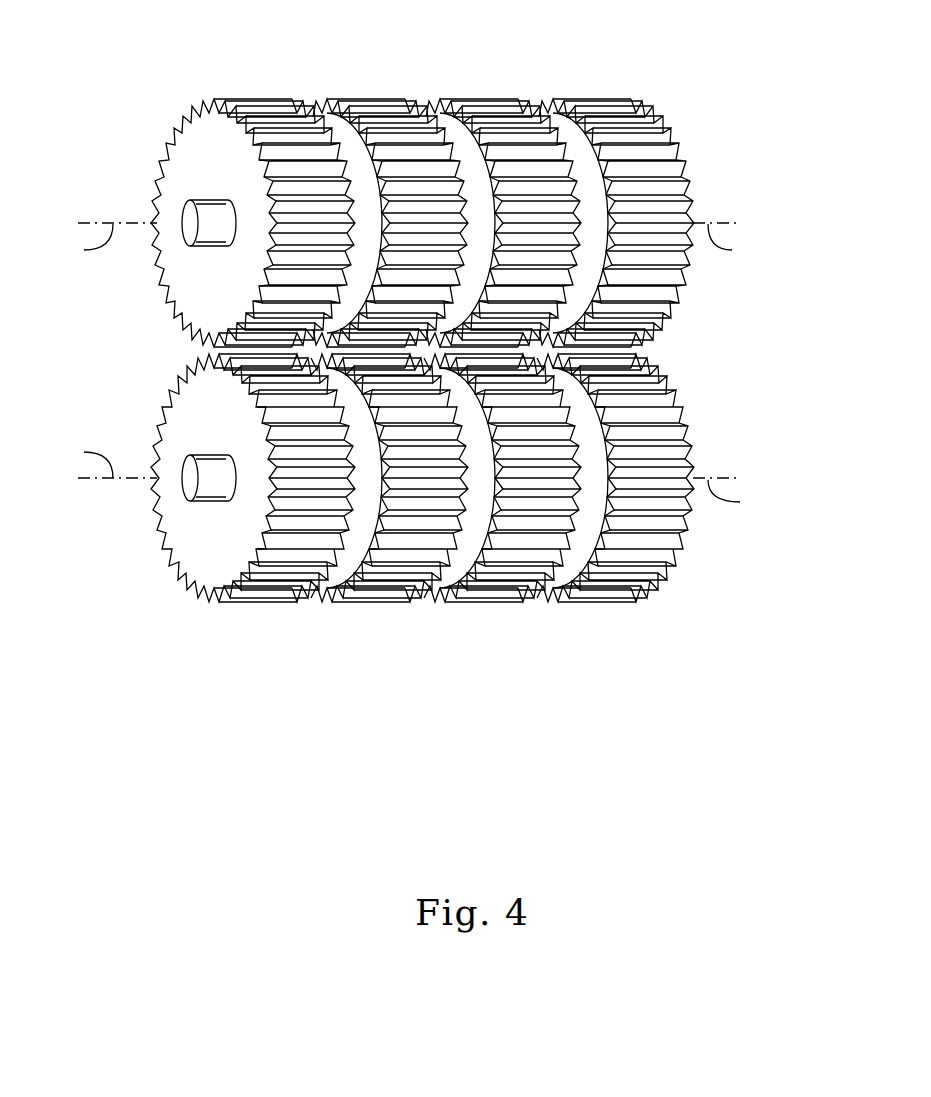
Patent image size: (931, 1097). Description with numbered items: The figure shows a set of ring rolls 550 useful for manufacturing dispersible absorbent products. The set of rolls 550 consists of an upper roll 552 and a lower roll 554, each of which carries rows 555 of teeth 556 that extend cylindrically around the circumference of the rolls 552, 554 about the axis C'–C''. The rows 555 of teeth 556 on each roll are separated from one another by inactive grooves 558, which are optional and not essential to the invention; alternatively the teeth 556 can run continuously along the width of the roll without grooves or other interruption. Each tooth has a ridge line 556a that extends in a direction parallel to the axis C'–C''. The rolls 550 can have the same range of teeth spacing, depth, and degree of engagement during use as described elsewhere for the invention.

The set of rolls 550 is at (431, 364).
The upper roll 552 is at (438, 364).
The lower roll 554 is at (690, 383).
The rows of teeth 555 is at (466, 97).
The teeth 556 is at (614, 351).
The ridge lines 556a is at (591, 105).
The inactive grooves 558 is at (567, 133).